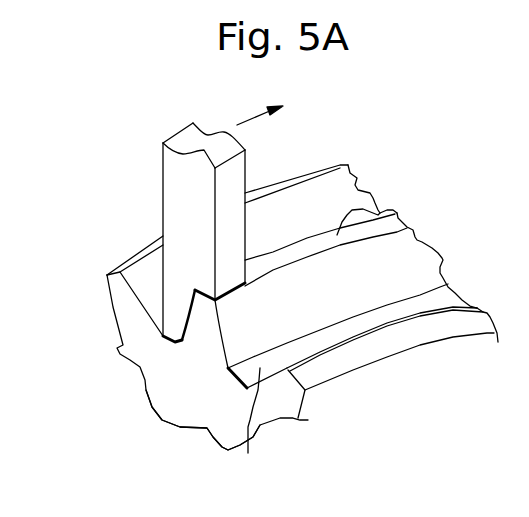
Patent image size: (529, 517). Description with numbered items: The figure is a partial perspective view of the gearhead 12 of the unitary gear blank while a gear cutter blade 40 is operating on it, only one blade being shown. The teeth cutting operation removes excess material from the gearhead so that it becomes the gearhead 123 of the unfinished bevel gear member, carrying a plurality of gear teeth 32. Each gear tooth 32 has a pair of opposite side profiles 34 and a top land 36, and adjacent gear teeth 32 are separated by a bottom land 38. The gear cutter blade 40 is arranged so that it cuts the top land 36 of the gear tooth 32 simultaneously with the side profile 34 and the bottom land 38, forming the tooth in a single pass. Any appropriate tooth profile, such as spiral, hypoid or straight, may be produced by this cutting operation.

The gearhead 12 is at (160, 420).
The gearhead 123 is at (173, 434).
The gear tooth 32 is at (112, 307).
The side profile 34 is at (346, 290).
The top land 36 is at (375, 205).
The bottom land 38 is at (363, 394).
The gear cutter blade 40 is at (163, 187).